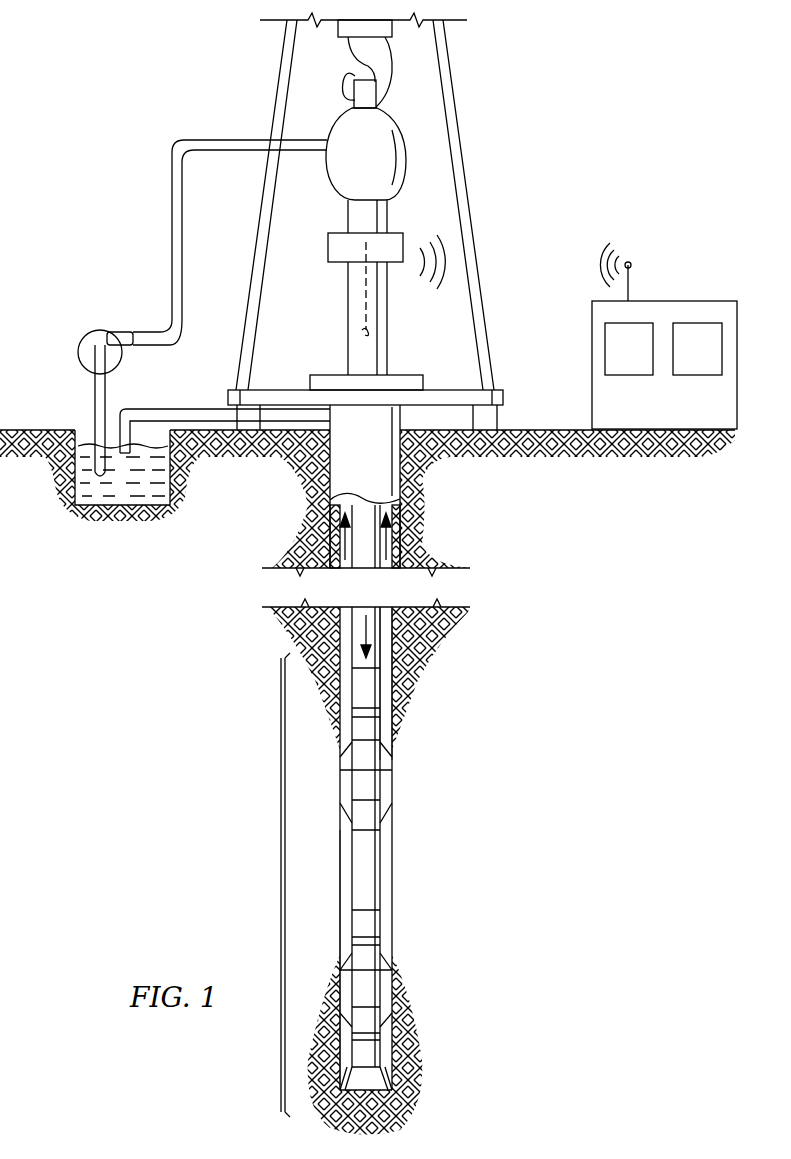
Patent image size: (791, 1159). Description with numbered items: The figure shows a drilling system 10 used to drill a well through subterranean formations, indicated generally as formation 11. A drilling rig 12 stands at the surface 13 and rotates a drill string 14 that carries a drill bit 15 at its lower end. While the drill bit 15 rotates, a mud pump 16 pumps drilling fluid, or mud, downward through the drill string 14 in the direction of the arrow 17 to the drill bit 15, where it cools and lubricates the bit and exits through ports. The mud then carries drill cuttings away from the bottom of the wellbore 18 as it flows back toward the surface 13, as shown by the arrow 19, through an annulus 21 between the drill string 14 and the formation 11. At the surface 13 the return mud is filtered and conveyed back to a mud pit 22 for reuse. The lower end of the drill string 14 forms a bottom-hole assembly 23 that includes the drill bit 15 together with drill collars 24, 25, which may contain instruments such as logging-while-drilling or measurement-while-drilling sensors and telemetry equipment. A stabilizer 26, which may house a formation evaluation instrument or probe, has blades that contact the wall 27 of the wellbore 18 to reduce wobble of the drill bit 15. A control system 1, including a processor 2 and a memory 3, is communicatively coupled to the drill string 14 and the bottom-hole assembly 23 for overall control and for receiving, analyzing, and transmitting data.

The drilling system 10 is at (567, 100).
The drilling rig 12 is at (270, 102).
The mud pump 16 is at (80, 358).
The surface 13 is at (535, 430).
The mud pit 22 is at (80, 432).
The annulus 21 is at (392, 735).
The drill string 14 is at (383, 693).
The arrow 17 is at (372, 624).
The wellbore 18 is at (386, 662).
The arrow 19 is at (395, 540).
The drill collar 24 is at (370, 787).
The wall 27 is at (394, 880).
The drill collar 25 is at (370, 985).
The stabilizer 26 is at (388, 993).
The drill bit 15 is at (380, 1077).
The formation 11 is at (546, 800).
The bottom-hole assembly 23 is at (285, 878).
The control system 1 is at (669, 415).
The processor 2 is at (635, 362).
The memory 3 is at (704, 362).